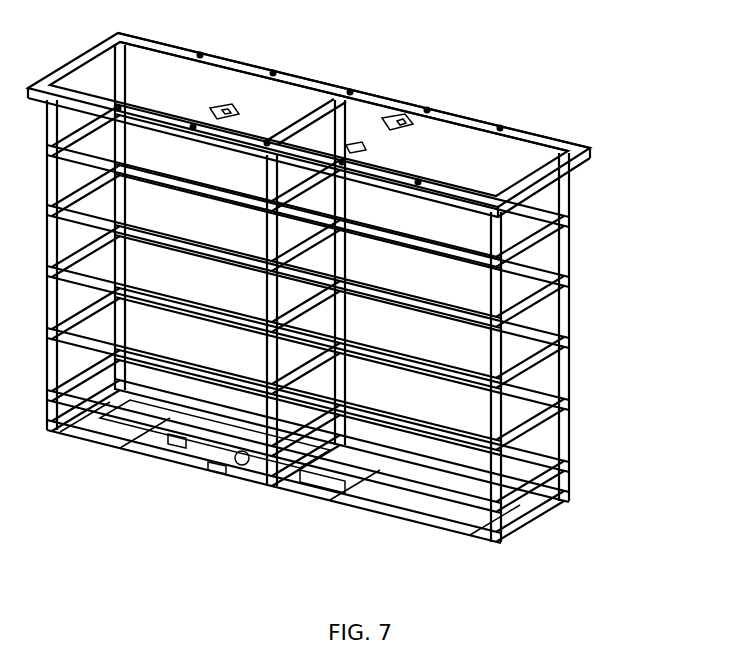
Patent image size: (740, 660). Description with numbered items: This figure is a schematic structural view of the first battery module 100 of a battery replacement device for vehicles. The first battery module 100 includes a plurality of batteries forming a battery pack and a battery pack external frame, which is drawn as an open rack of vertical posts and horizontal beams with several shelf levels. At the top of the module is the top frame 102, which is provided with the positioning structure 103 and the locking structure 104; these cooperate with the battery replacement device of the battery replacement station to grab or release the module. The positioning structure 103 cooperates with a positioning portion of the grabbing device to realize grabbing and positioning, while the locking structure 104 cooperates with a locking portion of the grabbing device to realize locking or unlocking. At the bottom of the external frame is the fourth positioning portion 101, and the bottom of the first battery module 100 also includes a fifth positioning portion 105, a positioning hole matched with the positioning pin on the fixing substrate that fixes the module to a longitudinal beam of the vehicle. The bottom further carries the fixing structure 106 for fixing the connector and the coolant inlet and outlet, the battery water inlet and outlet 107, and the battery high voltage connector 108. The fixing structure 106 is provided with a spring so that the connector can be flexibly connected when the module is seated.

The first battery module 100 is at (580, 240).
The fourth positioning portion 101 is at (193, 447).
The top frame 102 is at (517, 133).
The positioning structure 103 is at (273, 73).
The locking structure 104 is at (427, 110).
The fifth positioning portion 105 is at (177, 440).
The fixing structure 106 is at (217, 467).
The battery water inlet and outlet 107 is at (253, 463).
The battery high voltage connector 108 is at (340, 487).